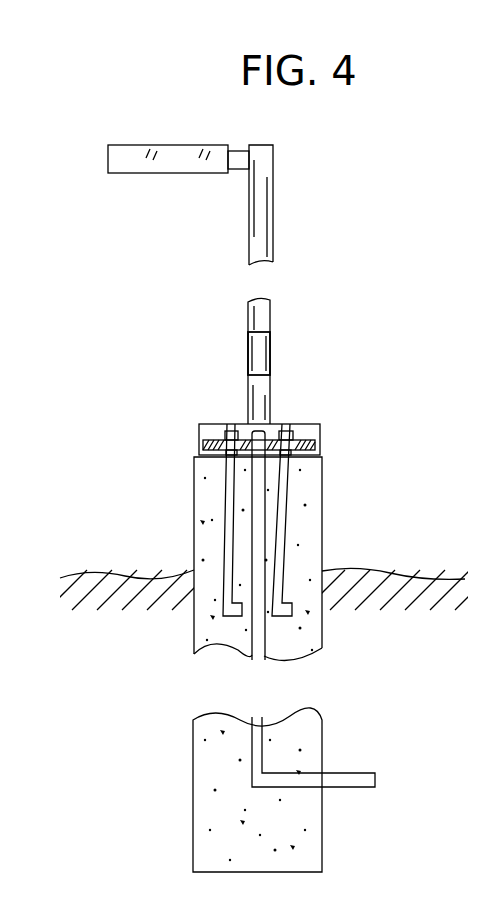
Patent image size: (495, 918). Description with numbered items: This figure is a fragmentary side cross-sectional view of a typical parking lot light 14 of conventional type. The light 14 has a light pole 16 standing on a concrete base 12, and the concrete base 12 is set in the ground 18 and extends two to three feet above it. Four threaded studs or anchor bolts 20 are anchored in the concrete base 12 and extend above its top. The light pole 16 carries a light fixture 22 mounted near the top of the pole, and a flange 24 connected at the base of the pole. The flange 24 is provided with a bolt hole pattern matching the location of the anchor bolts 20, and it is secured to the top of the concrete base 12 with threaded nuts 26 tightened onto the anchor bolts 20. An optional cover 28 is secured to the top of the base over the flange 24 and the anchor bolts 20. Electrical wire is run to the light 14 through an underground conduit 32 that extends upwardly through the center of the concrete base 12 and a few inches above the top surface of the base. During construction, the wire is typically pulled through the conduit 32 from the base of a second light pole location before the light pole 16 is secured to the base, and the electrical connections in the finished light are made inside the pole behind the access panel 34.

The concrete base 12 is at (322, 511).
The light 14 is at (185, 307).
The light pole 16 is at (273, 262).
The ground 18 is at (130, 575).
The anchor bolts 20 is at (230, 424).
The light fixture 22 is at (170, 173).
The flange 24 is at (203, 446).
The threaded nuts 26 is at (225, 434).
The cover 28 is at (199, 424).
The underground conduit 32 is at (225, 643).
The access panel 34 is at (271, 340).